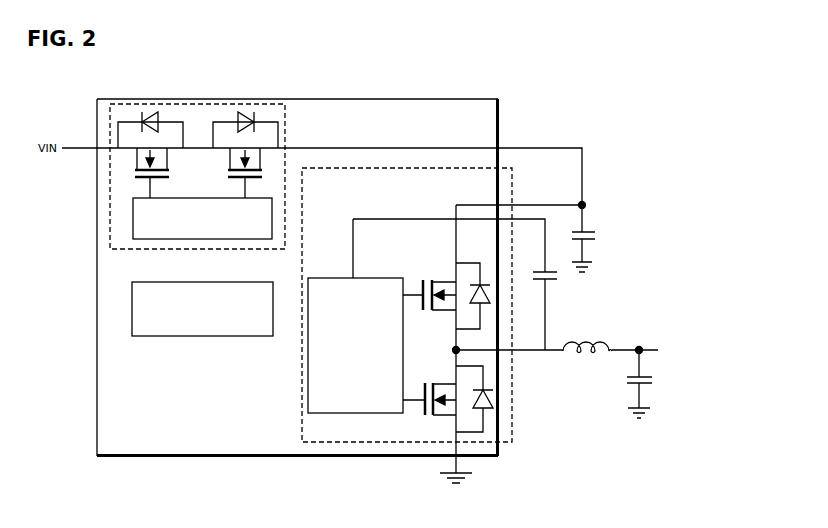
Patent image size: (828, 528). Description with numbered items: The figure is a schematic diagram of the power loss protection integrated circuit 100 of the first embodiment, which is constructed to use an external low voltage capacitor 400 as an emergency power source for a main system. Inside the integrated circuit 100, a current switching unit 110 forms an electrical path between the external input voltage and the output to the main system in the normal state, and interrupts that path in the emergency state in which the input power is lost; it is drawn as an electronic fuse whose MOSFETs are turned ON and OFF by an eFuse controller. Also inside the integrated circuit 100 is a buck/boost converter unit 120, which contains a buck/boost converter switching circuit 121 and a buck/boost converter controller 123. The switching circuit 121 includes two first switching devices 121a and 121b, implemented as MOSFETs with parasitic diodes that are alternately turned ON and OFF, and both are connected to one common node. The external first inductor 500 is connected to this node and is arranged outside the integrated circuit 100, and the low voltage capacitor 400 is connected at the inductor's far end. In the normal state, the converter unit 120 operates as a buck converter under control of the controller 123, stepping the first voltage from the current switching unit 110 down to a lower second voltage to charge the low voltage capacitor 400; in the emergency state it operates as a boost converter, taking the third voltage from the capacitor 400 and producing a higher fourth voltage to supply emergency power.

The power loss protection integrated circuit 100 is at (315, 89).
The current switching unit 110 is at (110, 229).
The buck/boost converter unit 120 is at (396, 443).
The buck/boost converter switching circuit 121 is at (421, 342).
The first switching device 121a is at (422, 282).
The first switching device 121b is at (424, 412).
The buck/boost converter controller 123 is at (328, 413).
The first inductor 500 is at (612, 343).
The low voltage capacitor 400 is at (655, 378).